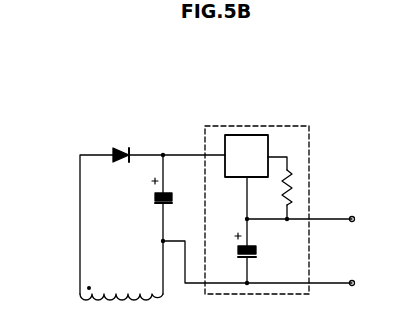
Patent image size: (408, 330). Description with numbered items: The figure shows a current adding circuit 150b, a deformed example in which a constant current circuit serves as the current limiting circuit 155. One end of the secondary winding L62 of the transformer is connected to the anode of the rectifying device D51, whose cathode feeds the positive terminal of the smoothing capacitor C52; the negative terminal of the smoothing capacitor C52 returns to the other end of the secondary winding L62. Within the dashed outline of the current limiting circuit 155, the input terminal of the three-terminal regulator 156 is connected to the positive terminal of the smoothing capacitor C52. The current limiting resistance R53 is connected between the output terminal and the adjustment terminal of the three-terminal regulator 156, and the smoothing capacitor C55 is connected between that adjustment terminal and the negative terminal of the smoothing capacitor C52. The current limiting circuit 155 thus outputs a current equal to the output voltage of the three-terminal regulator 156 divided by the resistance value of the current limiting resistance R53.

The current adding circuit 150b is at (57, 160).
The rectifying device D51 is at (122, 165).
The smoothing capacitor C52 is at (160, 205).
The secondary winding L62 is at (139, 279).
The current limiting circuit 155 is at (205, 134).
The three-terminal regulator 156 is at (269, 143).
The current limiting resistance R53 is at (298, 186).
The smoothing capacitor C55 is at (236, 251).